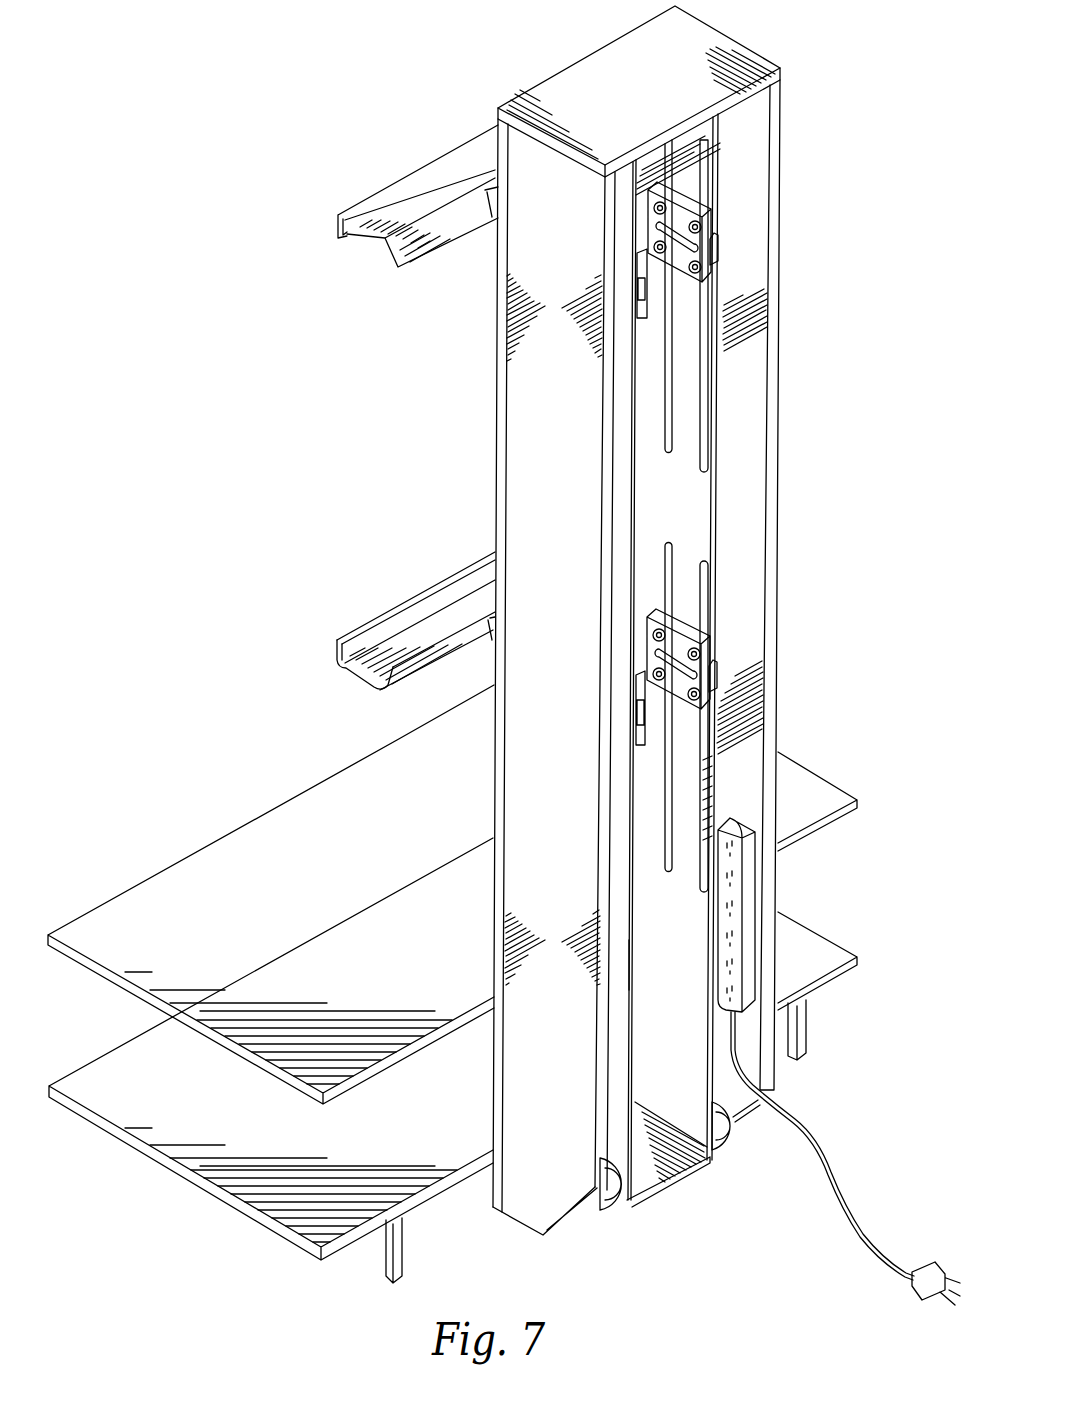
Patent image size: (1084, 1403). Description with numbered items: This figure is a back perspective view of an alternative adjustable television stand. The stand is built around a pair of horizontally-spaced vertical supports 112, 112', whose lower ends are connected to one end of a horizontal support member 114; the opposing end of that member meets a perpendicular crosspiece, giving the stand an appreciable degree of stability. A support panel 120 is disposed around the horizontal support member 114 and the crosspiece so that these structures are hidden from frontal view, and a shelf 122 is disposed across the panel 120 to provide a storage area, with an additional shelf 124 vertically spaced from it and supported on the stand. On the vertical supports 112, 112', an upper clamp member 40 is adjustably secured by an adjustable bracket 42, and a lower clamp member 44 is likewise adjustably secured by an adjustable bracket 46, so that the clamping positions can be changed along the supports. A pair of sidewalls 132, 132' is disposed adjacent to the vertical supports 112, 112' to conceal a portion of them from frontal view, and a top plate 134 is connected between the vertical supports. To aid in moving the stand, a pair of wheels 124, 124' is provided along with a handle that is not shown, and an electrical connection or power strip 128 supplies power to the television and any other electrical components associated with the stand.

The upper clamp member 40 is at (412, 163).
The adjustable bracket 42 is at (683, 205).
The lower clamp member 44 is at (410, 590).
The adjustable bracket 46 is at (680, 628).
The vertical support 112 is at (751, 516).
The vertical support 112' is at (659, 973).
The horizontal support member 114 is at (650, 1122).
The support panel 120 is at (378, 1268).
The shelf 122 is at (93, 1082).
The shelf 124 is at (452, 942).
The wheel 124' is at (611, 1217).
The power strip 128 is at (752, 872).
The sidewall 132 is at (669, 646).
The sidewall 132' is at (519, 1218).
The top plate 134 is at (597, 64).